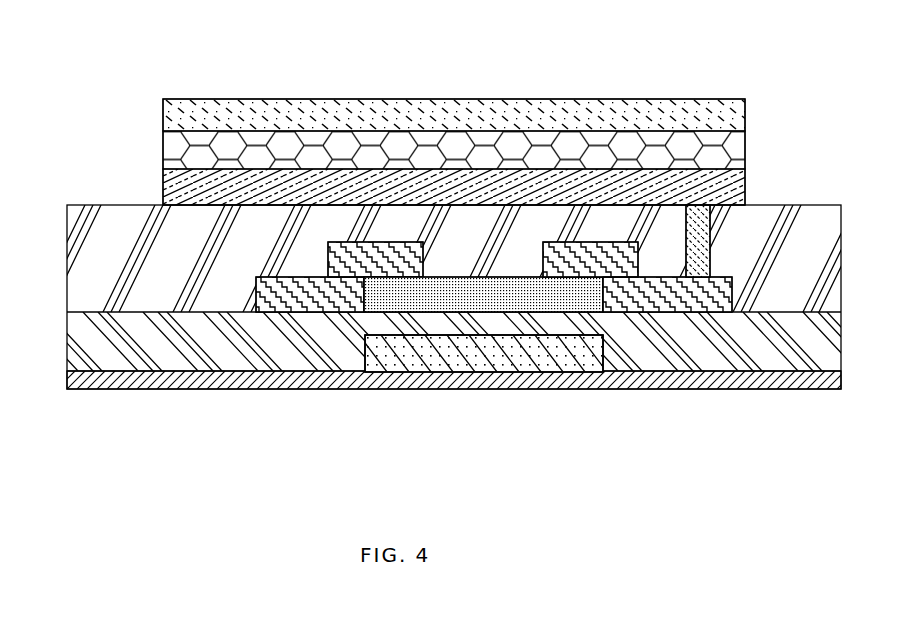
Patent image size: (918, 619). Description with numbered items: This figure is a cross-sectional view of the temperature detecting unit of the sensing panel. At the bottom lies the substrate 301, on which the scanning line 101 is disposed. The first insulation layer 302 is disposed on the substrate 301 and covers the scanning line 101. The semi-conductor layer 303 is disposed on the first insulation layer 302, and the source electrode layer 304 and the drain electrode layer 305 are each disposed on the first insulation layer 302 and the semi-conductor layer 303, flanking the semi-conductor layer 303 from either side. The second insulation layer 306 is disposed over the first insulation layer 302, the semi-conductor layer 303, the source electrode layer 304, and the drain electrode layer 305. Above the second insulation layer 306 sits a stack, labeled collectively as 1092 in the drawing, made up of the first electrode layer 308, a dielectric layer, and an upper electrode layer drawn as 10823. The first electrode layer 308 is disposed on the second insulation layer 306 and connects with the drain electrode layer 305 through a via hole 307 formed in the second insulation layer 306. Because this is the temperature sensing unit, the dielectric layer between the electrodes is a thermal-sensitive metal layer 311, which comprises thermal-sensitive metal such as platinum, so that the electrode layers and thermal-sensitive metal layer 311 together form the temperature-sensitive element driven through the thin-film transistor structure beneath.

The display stack 1092 is at (80, 197).
The encapsulation layer 10823 is at (163, 118).
The thermal-sensitive metal layer 311 is at (163, 155).
The first electrode layer 308 is at (163, 187).
The via hole 307 is at (706, 250).
The second insulation layer 306 is at (760, 312).
The drain electrode layer 305 is at (647, 312).
The source electrode layer 304 is at (309, 312).
The semi-conductor layer 303 is at (532, 312).
The first insulation layer 302 is at (237, 372).
The substrate 301 is at (185, 392).
The scanning line 101 is at (405, 372).